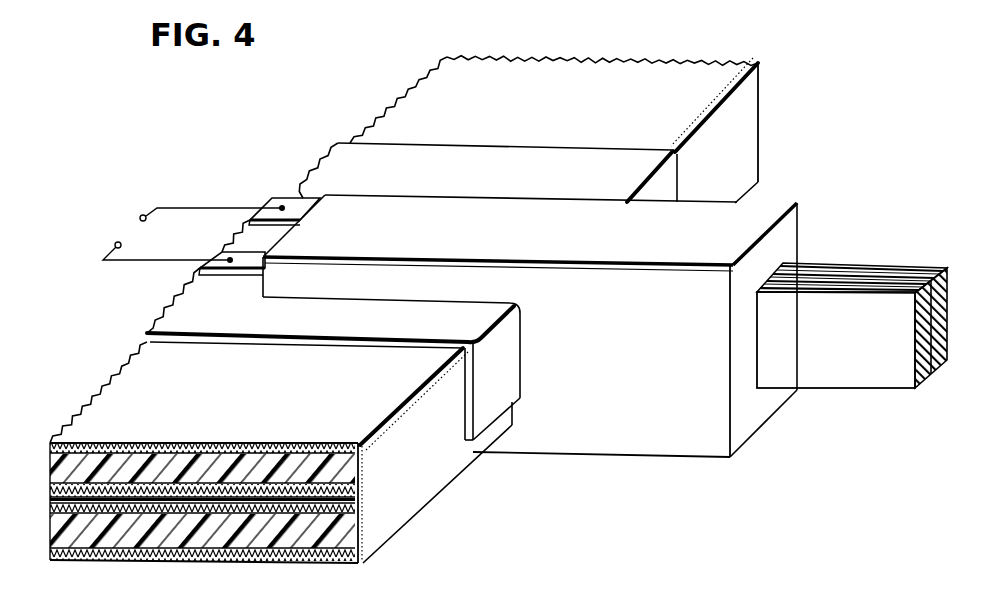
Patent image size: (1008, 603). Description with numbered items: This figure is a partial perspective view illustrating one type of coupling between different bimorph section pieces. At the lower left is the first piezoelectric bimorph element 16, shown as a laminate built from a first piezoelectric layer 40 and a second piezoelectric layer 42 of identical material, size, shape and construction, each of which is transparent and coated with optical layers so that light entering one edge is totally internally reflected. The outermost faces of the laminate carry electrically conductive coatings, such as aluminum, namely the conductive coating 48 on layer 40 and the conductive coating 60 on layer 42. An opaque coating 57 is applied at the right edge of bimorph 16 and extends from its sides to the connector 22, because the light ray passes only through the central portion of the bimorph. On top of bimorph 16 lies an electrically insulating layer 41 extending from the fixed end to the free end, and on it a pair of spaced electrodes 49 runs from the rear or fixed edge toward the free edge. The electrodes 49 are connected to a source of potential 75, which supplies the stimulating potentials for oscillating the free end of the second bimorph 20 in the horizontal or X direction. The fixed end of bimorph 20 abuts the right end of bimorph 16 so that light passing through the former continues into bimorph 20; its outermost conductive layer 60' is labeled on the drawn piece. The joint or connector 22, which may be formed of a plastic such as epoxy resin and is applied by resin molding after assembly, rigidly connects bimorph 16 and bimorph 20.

The first piezoelectric bimorph element 16 is at (630, 52).
The opaque coating 57 is at (745, 139).
The electrically insulating layer 41 is at (548, 186).
The connector 22 is at (625, 380).
The electrodes 49 is at (297, 203).
The source of potential 75 is at (116, 204).
The electrically conductive coating 48 is at (298, 401).
The electrically conductive coating 60 is at (204, 522).
The first piezoelectric layer 40 is at (158, 473).
The piezoelectric layer 42 is at (153, 533).
The bimorph 20 is at (873, 253).
The conductive layer 60' is at (836, 340).